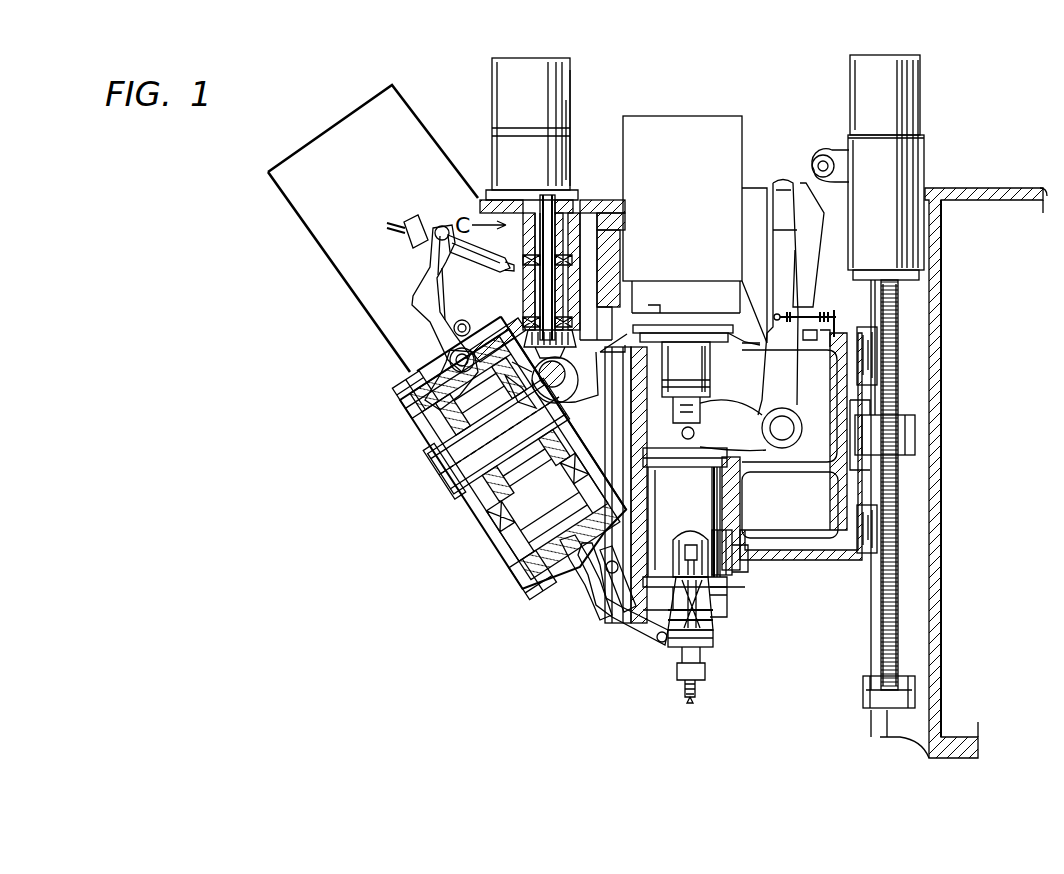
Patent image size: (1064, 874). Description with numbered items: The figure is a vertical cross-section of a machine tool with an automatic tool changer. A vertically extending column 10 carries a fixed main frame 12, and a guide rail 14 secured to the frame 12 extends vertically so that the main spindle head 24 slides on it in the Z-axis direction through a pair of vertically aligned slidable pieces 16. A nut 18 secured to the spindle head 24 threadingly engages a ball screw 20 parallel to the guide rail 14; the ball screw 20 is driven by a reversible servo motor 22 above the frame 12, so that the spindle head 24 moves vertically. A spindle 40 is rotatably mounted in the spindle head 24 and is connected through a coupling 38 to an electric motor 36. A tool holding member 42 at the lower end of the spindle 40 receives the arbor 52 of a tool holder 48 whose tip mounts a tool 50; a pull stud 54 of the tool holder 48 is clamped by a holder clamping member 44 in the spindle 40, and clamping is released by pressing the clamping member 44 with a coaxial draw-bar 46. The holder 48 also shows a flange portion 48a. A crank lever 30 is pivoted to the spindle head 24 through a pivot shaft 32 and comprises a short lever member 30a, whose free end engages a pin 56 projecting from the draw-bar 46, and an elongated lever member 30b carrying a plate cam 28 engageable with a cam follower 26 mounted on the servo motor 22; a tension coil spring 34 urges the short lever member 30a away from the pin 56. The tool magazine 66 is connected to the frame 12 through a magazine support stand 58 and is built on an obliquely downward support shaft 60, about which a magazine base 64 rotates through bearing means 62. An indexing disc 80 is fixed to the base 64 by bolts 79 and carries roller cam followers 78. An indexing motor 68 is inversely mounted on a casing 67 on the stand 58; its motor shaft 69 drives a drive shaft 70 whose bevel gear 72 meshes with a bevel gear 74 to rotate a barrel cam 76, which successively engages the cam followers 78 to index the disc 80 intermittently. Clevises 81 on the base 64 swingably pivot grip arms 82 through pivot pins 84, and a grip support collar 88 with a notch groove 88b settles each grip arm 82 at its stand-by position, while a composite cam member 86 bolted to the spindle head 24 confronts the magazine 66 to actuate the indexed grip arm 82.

The column 10 is at (943, 232).
The main frame 12 is at (753, 190).
The guide rail 14 is at (880, 626).
The slidable pieces 16 is at (876, 364).
The nut 18 is at (906, 456).
The ball screw 20 is at (900, 299).
The reversible servo motor 22 is at (922, 86).
The main spindle head 24 is at (641, 485).
The cam follower 26 is at (822, 152).
The plate cam 28 is at (824, 212).
The crank lever 30 is at (756, 362).
The short lever member 30a is at (662, 450).
The elongated lever member 30b is at (786, 190).
The pivot shaft 32 is at (800, 446).
The tension coil spring 34 is at (815, 312).
The electric motor 36 is at (716, 118).
The coupling 38 is at (692, 355).
The spindle 40 is at (712, 549).
The tool holding member 42 is at (708, 620).
The holder clamping member 44 is at (725, 600).
The draw-bar 46 is at (693, 552).
The tool holder 48 is at (700, 668).
The flange 48a is at (710, 648).
The tool 50 is at (684, 687).
The arbor 52 is at (710, 634).
The pull stud 54 is at (730, 580).
The pin 56 is at (720, 466).
The magazine support stand 58 is at (598, 205).
The support shaft 60 is at (462, 490).
The bearing means 62 is at (458, 482).
The magazine base 64 is at (445, 458).
The tool magazine 66 is at (422, 276).
The casing 67 is at (610, 232).
The indexing motor 68 is at (568, 62).
The motor shaft 69 is at (560, 190).
The drive shaft 70 is at (556, 295).
The bevel gear 72 is at (572, 345).
The bevel gear 74 is at (578, 372).
The barrel cam 76 is at (625, 345).
The cam followers 78 is at (525, 360).
The bolts 79 is at (470, 395).
The indexing disc 80 is at (490, 340).
The clevises 81 is at (452, 378).
The grip arms 82 is at (374, 255).
The pivot pins 84 is at (410, 318).
The composite cam member 86 is at (572, 585).
The grip support collar 88 is at (428, 426).
The notch groove 88b is at (418, 414).